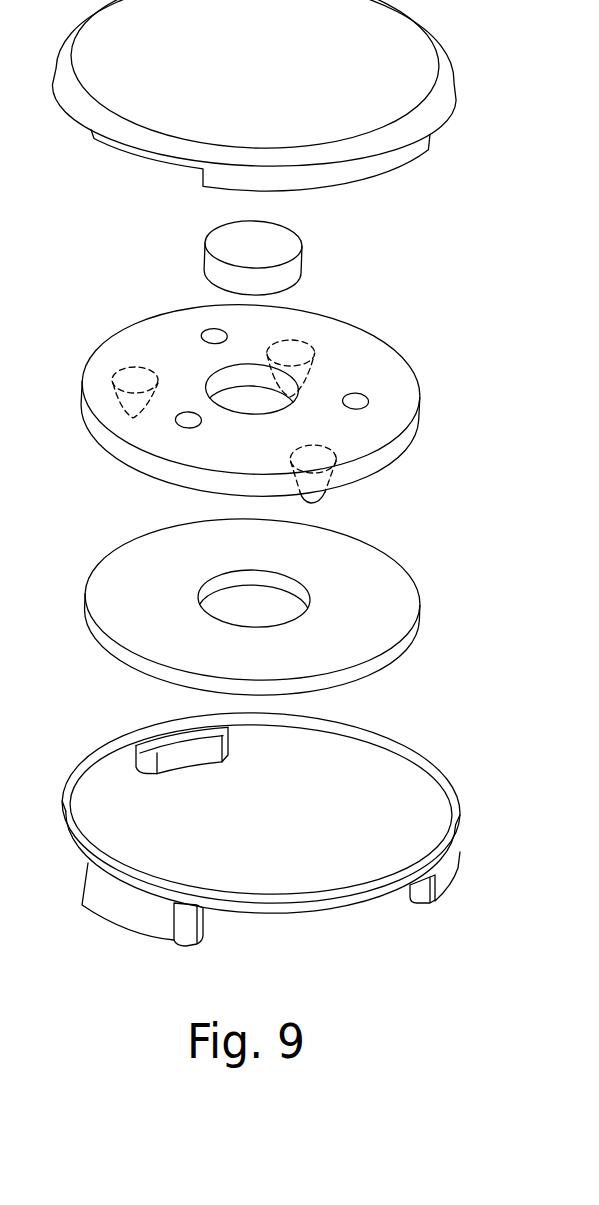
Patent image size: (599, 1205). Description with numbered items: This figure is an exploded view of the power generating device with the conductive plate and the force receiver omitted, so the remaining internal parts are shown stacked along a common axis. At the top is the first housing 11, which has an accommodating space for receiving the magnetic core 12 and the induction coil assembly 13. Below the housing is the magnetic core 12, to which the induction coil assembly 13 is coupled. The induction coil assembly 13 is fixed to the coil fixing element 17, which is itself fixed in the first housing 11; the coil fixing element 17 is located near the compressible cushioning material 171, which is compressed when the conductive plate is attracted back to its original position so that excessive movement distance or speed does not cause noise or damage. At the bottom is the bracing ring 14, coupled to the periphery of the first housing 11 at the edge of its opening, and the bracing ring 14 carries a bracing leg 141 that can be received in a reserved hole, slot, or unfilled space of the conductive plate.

The first housing 11 is at (447, 96).
The magnetic core 12 is at (297, 263).
The coil fixing element 17 is at (286, 411).
The cushioning material 171 is at (323, 497).
The induction coil assembly 13 is at (418, 615).
The bracing ring 14 is at (453, 807).
The bracing leg 141 is at (121, 900).